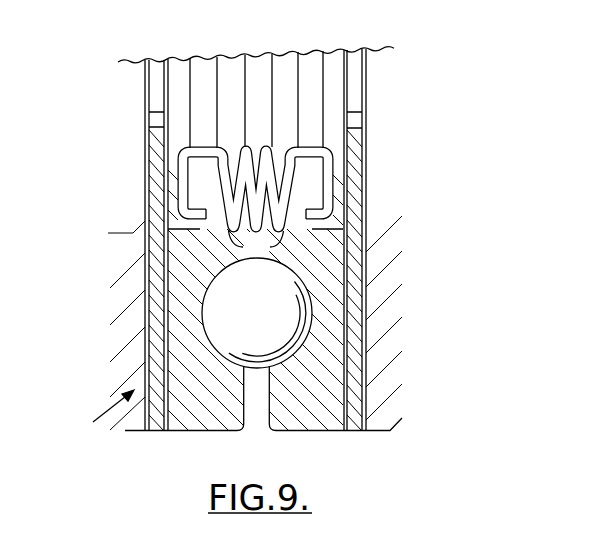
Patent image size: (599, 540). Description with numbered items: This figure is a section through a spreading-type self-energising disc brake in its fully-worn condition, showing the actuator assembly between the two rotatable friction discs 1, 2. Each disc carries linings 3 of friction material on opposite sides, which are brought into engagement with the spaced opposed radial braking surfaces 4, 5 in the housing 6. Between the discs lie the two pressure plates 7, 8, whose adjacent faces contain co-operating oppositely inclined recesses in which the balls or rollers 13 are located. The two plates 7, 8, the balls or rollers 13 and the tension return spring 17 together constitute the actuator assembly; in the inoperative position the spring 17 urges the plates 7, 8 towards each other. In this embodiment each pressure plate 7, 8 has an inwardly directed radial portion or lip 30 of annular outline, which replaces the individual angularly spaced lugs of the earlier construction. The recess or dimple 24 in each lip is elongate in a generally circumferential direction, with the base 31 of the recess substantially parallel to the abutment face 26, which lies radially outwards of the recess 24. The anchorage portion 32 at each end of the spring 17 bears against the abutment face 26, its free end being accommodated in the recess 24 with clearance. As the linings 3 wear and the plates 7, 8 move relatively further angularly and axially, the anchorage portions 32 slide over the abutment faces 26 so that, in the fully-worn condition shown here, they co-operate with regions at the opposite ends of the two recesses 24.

The rotatable friction disc 1 is at (158, 138).
The rotatable friction disc 2 is at (353, 177).
The lining 3 is at (366, 310).
The radial braking surface 4 is at (145, 355).
The radial braking surface 5 is at (366, 372).
The housing 6 is at (102, 418).
The pressure plate 7 is at (203, 410).
The pressure plate 8 is at (305, 412).
The balls or rollers 13 is at (273, 315).
The tension return spring 17 is at (322, 150).
The recess or dimple 24 is at (316, 229).
The abutment face 26 is at (328, 200).
The radial portion or lip 30 is at (298, 150).
The base of recess 31 is at (350, 262).
The anchorage portion 32 is at (330, 174).